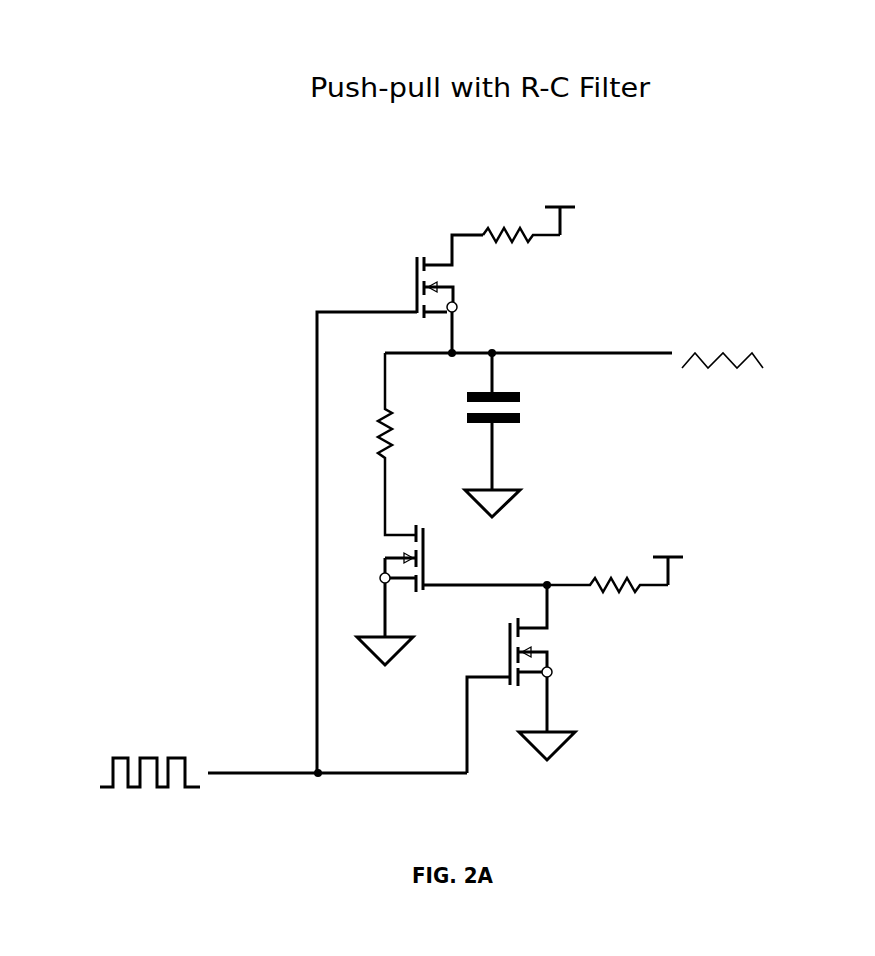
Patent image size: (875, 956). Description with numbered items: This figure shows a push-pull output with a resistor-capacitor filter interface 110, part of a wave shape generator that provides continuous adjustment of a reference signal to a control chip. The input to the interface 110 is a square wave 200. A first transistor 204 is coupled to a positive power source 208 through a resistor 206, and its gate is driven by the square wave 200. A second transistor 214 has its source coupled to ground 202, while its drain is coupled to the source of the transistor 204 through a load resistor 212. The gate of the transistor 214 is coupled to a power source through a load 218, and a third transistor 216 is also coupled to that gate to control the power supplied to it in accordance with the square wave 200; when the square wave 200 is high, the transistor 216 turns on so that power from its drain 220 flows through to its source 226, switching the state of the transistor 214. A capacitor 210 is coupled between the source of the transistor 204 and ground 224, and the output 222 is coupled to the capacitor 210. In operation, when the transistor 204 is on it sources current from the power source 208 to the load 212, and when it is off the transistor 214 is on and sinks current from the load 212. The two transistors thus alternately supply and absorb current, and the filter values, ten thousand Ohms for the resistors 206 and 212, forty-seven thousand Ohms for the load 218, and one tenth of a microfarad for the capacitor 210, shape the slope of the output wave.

The push-pull output with R-C filter interface 110 is at (95, 230).
The square wave 200 is at (210, 780).
The ground 202 is at (400, 653).
The transistor 204 is at (422, 240).
The resistor 206 is at (504, 192).
The power source 208 is at (587, 190).
The capacitor 210 is at (568, 389).
The resistor 212 is at (380, 420).
The second transistor 214 is at (368, 537).
The third transistor 216 is at (593, 653).
The load 218 is at (642, 590).
The power source 220 is at (683, 558).
The output 222 is at (673, 348).
The ground 224 is at (500, 503).
The source 226 is at (560, 749).